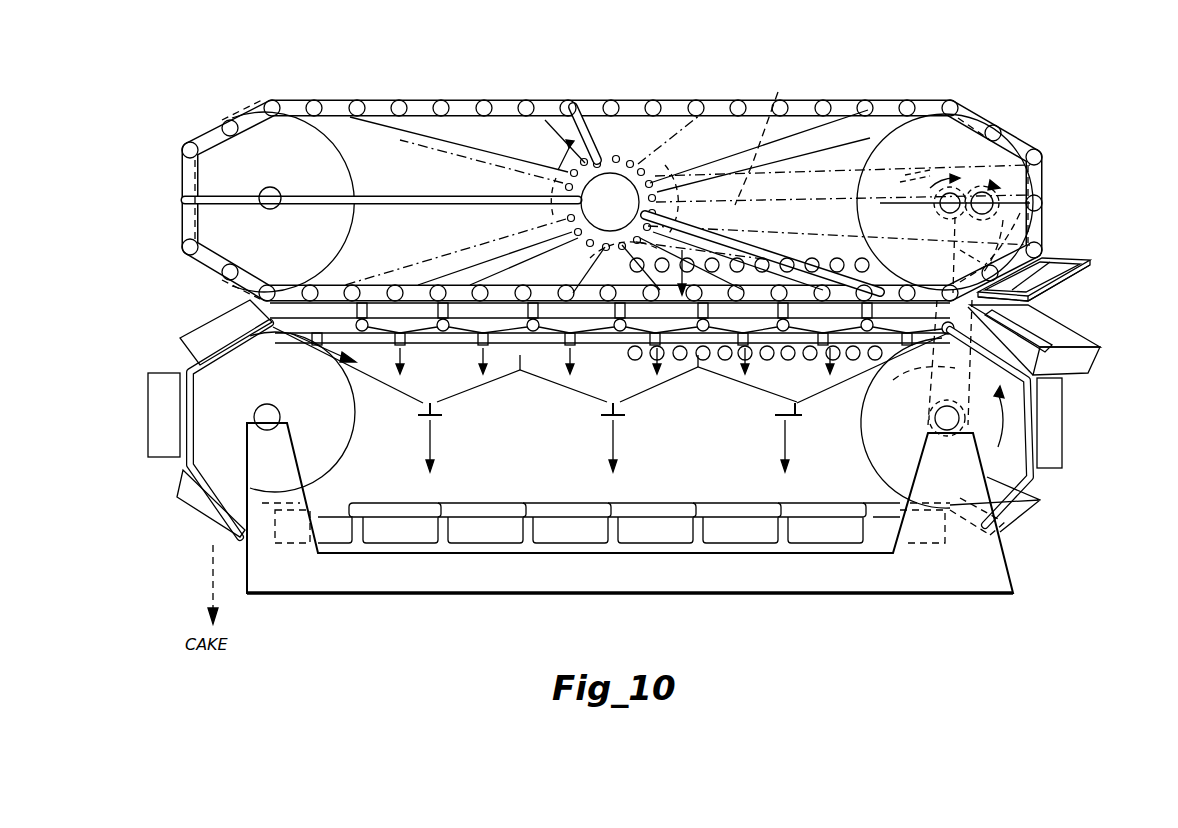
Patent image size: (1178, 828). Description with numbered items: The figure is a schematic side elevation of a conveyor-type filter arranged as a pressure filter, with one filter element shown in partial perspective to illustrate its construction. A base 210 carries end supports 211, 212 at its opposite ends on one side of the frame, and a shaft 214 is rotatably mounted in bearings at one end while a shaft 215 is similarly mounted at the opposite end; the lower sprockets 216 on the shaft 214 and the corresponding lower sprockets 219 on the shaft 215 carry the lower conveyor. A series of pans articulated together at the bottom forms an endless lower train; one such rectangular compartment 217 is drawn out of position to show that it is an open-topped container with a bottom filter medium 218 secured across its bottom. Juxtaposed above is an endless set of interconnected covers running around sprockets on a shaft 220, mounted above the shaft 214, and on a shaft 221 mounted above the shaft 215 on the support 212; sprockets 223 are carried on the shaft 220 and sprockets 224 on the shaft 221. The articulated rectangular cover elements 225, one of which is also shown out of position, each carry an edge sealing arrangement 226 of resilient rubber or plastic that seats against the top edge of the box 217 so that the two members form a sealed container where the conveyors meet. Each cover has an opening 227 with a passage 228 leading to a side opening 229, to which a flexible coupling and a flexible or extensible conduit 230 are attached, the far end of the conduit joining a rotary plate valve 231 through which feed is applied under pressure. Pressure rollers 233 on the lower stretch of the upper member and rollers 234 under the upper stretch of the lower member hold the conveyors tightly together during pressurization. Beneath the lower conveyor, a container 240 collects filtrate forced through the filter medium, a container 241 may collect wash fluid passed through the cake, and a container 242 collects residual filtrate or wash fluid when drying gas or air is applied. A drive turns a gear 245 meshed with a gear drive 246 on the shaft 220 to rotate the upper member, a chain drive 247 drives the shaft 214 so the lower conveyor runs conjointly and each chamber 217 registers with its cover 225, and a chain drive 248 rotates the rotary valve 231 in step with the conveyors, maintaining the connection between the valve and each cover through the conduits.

The base 210 is at (955, 580).
The end support 211 is at (1035, 500).
The end support 212 is at (253, 463).
The shaft 214 is at (934, 422).
The shaft 215 is at (278, 408).
The lower right drum 216 is at (890, 452).
The rectangular compartment 217 is at (1100, 360).
The bottom filter medium 218 is at (1040, 332).
The lower left drum 219 is at (333, 432).
The shaft 220 is at (940, 208).
The shaft 221 is at (270, 188).
The sprockets 223 is at (1015, 188).
The sprockets 224 is at (294, 132).
The cover element 225 is at (1050, 282).
The sealing arrangement 226 is at (1045, 301).
The opening 227 is at (1055, 290).
The passage 228 is at (1052, 262).
The side opening 229 is at (1030, 240).
The flexible conduit 230 is at (582, 113).
The rotary plate valve 231 is at (668, 181).
The pressure rollers 233 is at (773, 258).
The rollers 234 is at (810, 362).
The container 240 is at (768, 386).
The container 241 is at (603, 382).
The container 242 is at (447, 382).
The gear 245 is at (1003, 174).
The gear drive 246 is at (946, 168).
The chain drive 247 is at (922, 362).
The chain drive 248 is at (768, 136).